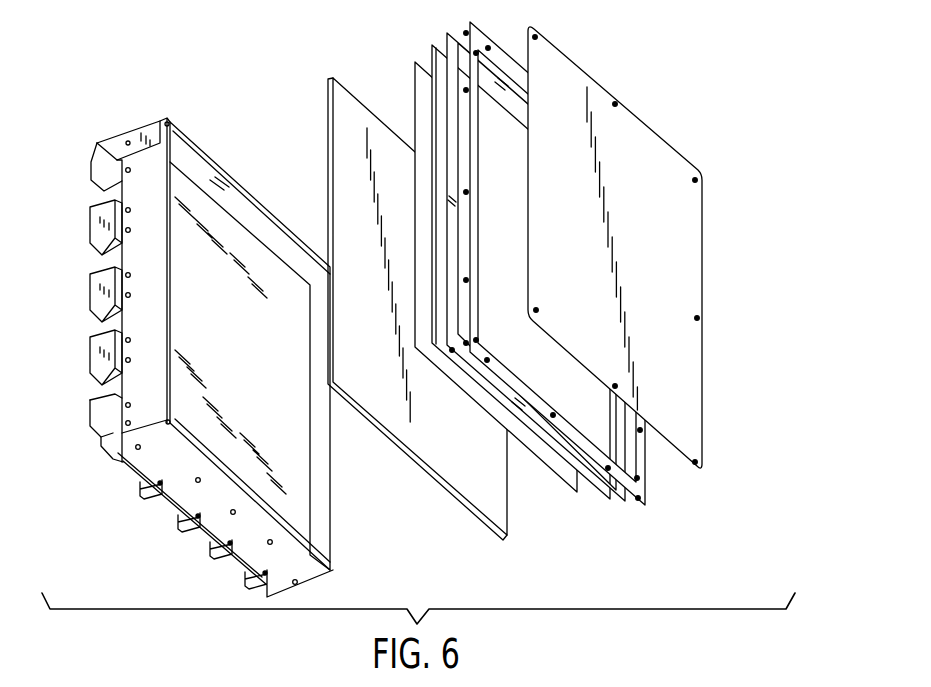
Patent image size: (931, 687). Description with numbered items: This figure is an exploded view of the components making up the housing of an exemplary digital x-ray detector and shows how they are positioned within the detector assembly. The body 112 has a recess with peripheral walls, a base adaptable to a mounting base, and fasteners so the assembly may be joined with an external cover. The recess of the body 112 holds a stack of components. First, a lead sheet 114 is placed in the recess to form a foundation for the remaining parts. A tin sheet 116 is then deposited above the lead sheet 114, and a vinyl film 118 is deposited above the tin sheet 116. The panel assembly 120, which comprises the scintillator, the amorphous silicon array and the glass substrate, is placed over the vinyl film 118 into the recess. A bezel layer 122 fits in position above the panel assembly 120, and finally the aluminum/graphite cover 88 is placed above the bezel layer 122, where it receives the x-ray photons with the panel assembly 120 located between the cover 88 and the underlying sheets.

The aluminum/graphite cover 88 is at (565, 97).
The body 112 is at (97, 142).
The lead sheet 114 is at (327, 125).
The tin sheet 116 is at (415, 98).
The vinyl film 118 is at (432, 57).
The panel assembly 120 is at (445, 46).
The bezel layer 122 is at (502, 50).